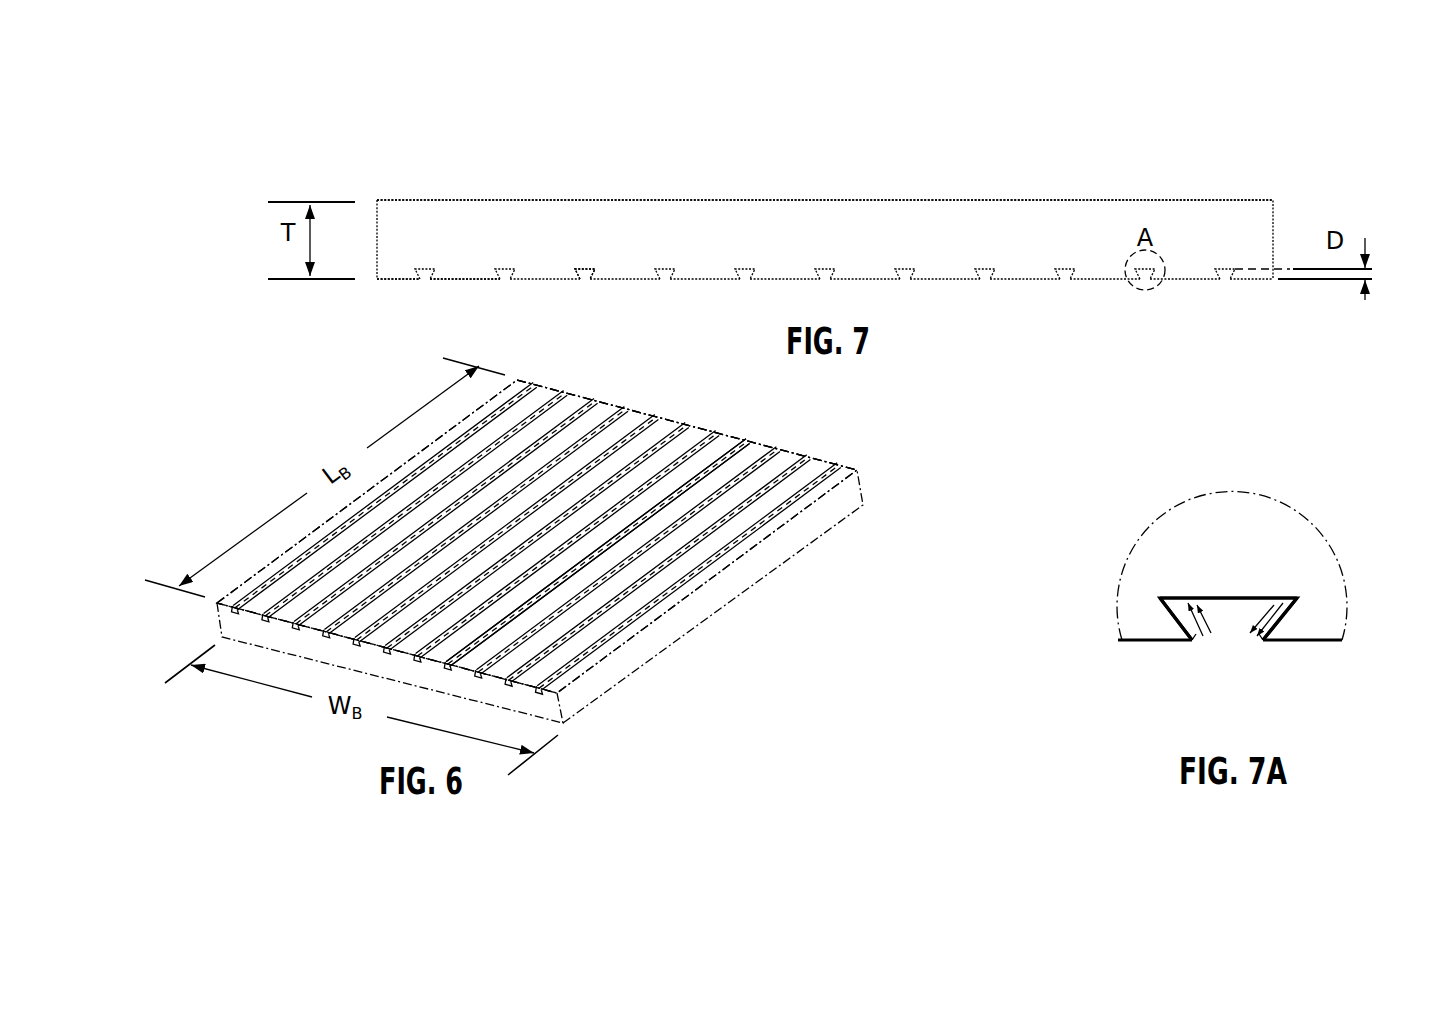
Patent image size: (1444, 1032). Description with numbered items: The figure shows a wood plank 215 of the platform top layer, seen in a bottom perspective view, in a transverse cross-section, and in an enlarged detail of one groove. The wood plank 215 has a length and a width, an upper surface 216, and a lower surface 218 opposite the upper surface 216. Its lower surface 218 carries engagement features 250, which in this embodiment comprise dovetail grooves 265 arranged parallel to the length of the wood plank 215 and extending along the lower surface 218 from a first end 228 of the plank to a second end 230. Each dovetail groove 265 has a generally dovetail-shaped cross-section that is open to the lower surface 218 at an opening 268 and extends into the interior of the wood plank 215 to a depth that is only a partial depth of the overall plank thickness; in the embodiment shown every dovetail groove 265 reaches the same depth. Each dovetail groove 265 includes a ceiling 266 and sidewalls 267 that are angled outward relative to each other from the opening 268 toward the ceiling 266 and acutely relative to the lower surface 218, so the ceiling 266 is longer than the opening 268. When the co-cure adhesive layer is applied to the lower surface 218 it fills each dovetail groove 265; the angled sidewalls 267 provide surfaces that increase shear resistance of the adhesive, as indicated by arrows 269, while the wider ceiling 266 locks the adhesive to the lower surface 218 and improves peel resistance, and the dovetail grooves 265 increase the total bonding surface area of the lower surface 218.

In FIG. 7, the wood plank 215 is at (1128, 162).
In FIG. 6, the wood plank 215 is at (708, 646).
In FIG. 7A, the wood plank 215 is at (1312, 555).
In FIG. 7, the upper surface 216 is at (506, 197).
In FIG. 7, the lower surface 218 is at (405, 279).
In FIG. 6, the lower surface 218 is at (673, 575).
In FIG. 7A, the lower surface 218 is at (1334, 648).
In FIG. 6, the first end 228 is at (481, 688).
In FIG. 6, the second end 230 is at (819, 457).
In FIG. 7, the engagement features 250 is at (558, 284).
In FIG. 6, the engagement features 250 is at (697, 417).
In FIG. 7, the dovetail grooves 265 is at (1068, 271).
In FIG. 6, the dovetail grooves 265 is at (648, 425).
In FIG. 7A, the dovetail grooves 265 is at (1146, 676).
In FIG. 7A, the ceiling 266 is at (1222, 598).
In FIG. 7A, the sidewalls 267 is at (1290, 612).
In FIG. 7A, the opening 268 is at (1263, 688).
In FIG. 7A, the arrows 269 is at (1243, 641).